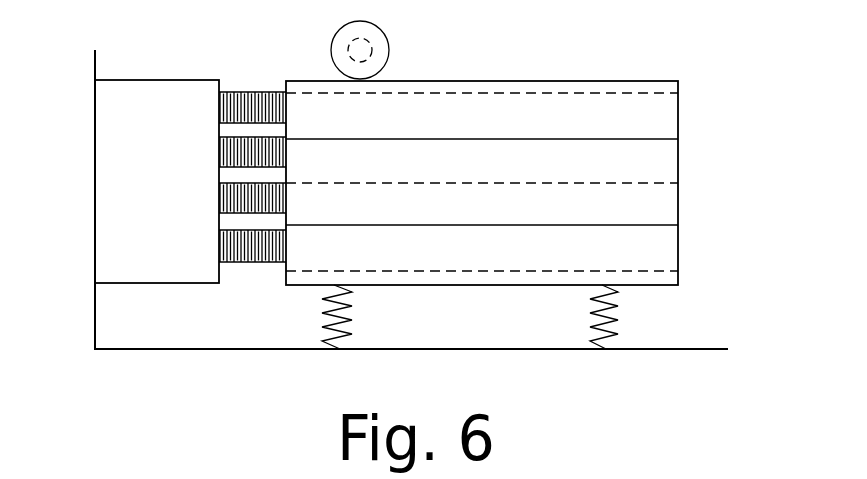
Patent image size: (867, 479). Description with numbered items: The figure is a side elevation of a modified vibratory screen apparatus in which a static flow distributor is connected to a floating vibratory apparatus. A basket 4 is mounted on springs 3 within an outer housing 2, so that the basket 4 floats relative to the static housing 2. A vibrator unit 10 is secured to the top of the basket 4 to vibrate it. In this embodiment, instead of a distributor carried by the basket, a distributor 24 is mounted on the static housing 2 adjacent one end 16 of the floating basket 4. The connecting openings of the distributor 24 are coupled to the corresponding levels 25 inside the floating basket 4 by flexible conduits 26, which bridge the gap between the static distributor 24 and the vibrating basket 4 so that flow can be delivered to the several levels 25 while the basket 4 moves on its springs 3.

The outer housing 2 is at (95, 320).
The springs 3 is at (610, 323).
The basket 4 is at (680, 248).
The vibrator unit 10 is at (390, 43).
The end 16 is at (310, 80).
The distributor 24 is at (152, 80).
The levels 25 is at (650, 248).
The flexible conduits 26 is at (218, 112).